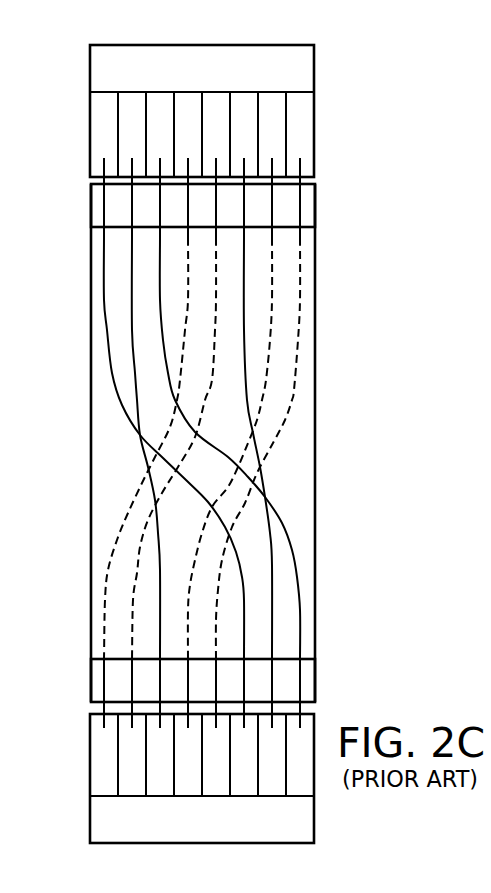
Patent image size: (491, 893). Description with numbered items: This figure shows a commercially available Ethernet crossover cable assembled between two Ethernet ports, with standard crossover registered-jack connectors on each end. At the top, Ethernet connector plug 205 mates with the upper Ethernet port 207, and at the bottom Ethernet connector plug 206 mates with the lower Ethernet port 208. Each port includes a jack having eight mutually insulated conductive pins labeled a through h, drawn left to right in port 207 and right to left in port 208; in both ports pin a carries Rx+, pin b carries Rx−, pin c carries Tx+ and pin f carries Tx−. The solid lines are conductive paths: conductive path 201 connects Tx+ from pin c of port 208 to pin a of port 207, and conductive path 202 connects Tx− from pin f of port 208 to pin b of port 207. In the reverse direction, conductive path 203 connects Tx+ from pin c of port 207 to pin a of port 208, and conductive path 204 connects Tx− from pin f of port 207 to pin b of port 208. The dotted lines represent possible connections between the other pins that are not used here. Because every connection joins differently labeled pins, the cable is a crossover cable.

The conductive path 201 is at (103, 293).
The conductive path 202 is at (132, 330).
The conductive path 203 is at (168, 373).
The conductive path 204 is at (244, 328).
The Ethernet connector plug 205 is at (316, 205).
The Ethernet connector plug 206 is at (316, 678).
The Ethernet port 207 is at (315, 70).
The Ethernet port 208 is at (315, 815).